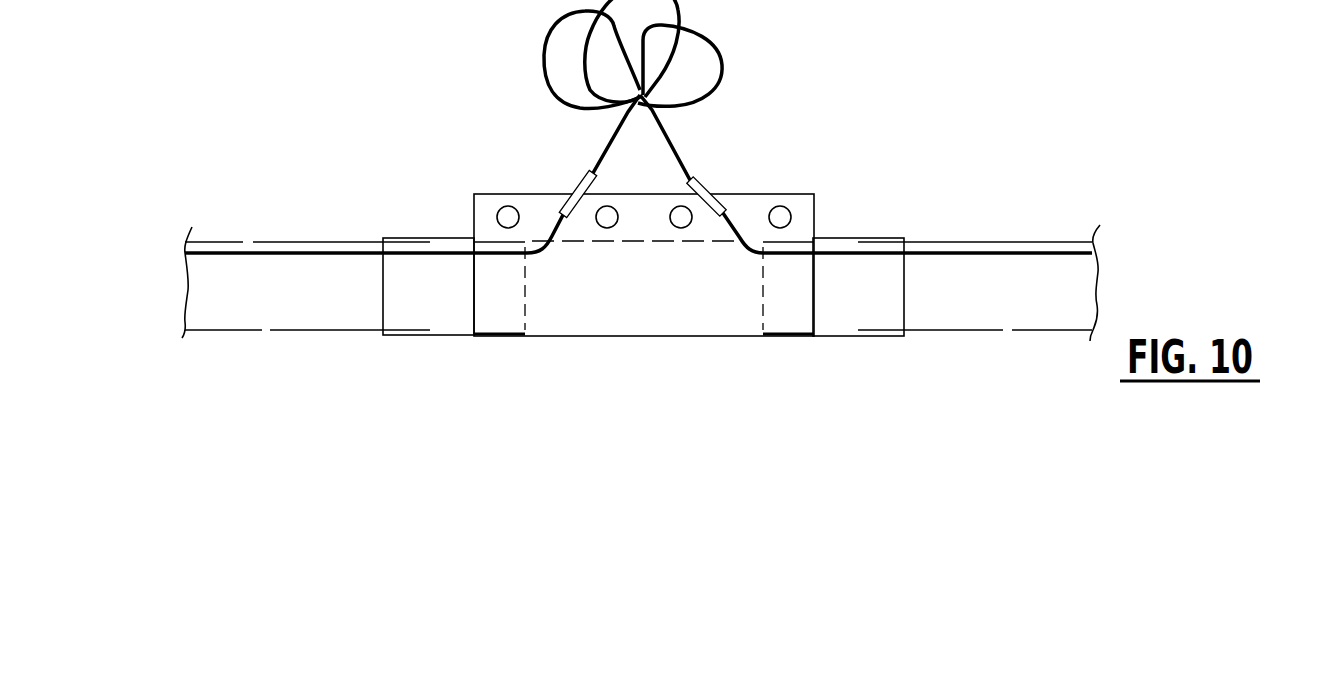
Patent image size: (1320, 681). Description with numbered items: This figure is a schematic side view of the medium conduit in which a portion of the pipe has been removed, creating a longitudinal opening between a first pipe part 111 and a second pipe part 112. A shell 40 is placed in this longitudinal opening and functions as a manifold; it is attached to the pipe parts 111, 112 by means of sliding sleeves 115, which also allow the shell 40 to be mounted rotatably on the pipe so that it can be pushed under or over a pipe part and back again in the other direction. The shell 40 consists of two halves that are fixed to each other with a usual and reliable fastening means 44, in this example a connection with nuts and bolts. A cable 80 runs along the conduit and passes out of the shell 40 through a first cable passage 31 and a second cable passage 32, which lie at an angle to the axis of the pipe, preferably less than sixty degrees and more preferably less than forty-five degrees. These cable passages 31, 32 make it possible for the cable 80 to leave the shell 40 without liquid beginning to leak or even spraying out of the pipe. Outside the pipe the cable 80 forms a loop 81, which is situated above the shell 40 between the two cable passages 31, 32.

The first cable passage 31 is at (535, 170).
The second cable passage 32 is at (730, 155).
The shell 40 is at (661, 372).
The fastening means 44 is at (780, 215).
The cable 80 is at (248, 247).
The loop 81 is at (544, 53).
The first pipe part 111 is at (267, 328).
The second pipe part 112 is at (1008, 316).
The sliding sleeves 115 is at (403, 336).